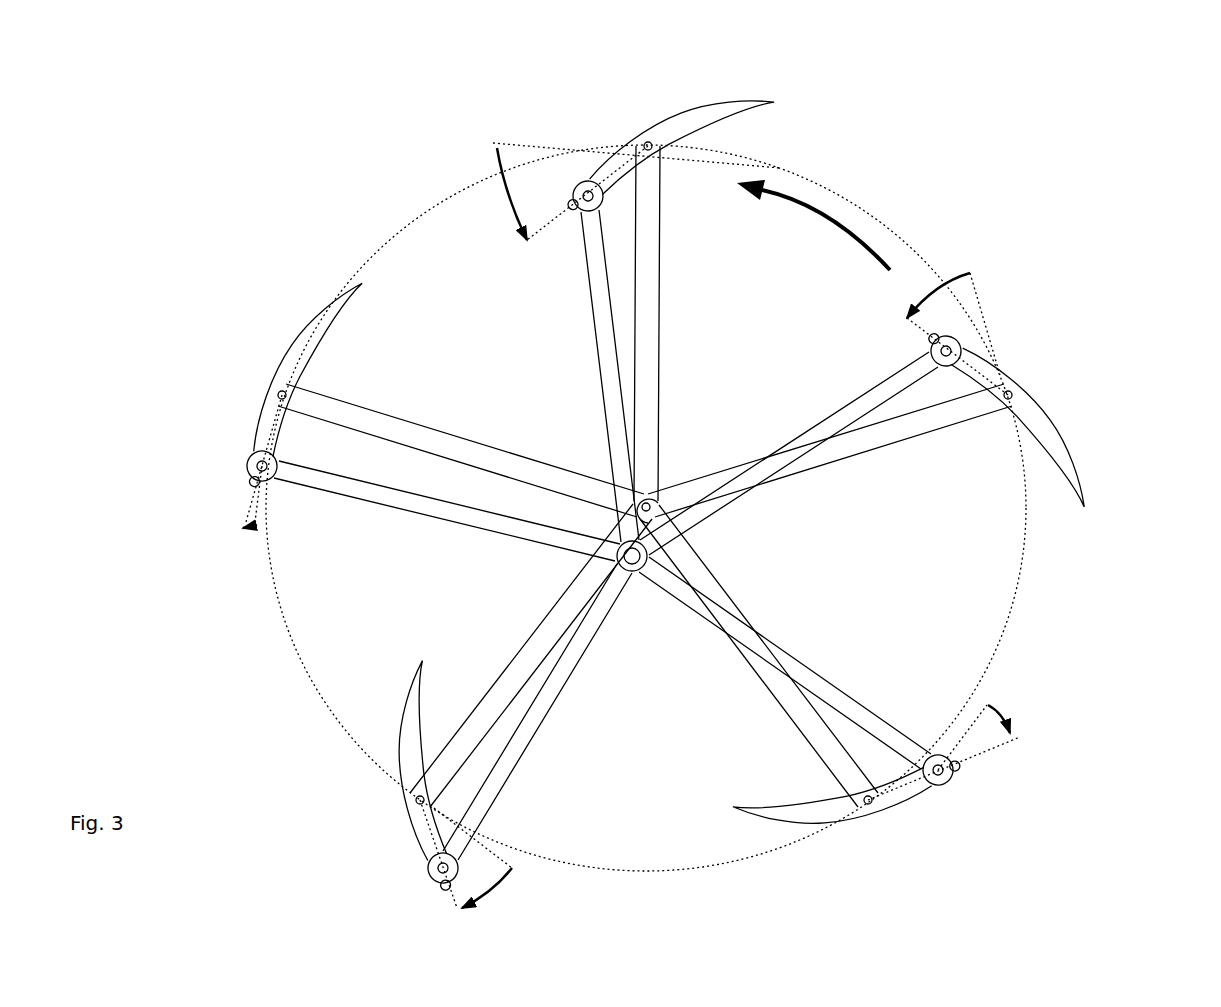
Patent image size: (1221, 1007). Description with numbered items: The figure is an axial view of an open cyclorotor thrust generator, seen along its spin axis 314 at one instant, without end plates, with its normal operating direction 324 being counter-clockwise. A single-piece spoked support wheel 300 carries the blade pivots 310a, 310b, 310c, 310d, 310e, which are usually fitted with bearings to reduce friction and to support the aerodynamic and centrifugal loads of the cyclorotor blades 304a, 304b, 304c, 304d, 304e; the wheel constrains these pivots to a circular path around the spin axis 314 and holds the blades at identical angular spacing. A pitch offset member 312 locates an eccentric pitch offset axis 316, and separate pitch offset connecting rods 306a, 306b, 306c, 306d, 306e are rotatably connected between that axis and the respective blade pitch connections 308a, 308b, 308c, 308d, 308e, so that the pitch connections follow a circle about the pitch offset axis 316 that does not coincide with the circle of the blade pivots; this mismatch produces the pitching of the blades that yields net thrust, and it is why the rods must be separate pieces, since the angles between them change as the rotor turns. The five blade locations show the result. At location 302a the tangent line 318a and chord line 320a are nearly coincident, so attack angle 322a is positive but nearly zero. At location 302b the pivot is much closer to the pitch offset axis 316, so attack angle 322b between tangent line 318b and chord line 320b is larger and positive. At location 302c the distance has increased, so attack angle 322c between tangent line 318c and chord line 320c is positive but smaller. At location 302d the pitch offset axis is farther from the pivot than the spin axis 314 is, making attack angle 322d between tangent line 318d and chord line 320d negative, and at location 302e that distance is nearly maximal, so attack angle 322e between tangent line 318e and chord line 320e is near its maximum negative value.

The spoked support wheel 300 is at (652, 488).
The location 302a is at (369, 436).
The location 302b is at (456, 758).
The location 302c is at (874, 745).
The location 302d is at (912, 377).
The location 302e is at (626, 283).
The cyclorotor blade 304a is at (297, 340).
The cyclorotor blade 304b is at (407, 711).
The cyclorotor blade 304c is at (770, 825).
The cyclorotor blade 304d is at (1085, 484).
The cyclorotor blade 304e is at (724, 116).
The pitch offset connecting rod 306a is at (341, 497).
The pitch offset connecting rod 306b is at (539, 738).
The pitch offset connecting rod 306c is at (858, 696).
The pitch offset connecting rod 306d is at (793, 432).
The pitch offset connecting rod 306e is at (595, 347).
The blade pitch connection 308a is at (250, 466).
The blade pitch connection 308b is at (434, 866).
The blade pitch connection 308c is at (941, 786).
The blade pitch connection 308d is at (952, 350).
The blade pitch connection 308e is at (582, 190).
The blade pivot 310a is at (279, 395).
The blade pivot 310b is at (417, 801).
The blade pivot 310c is at (868, 806).
The blade pivot 310d is at (1016, 393).
The blade pivot 310e is at (658, 154).
The pitch offset member 312 is at (656, 512).
The spin axis 314 is at (648, 499).
The pitch offset axis 316 is at (634, 566).
The tangent line 318a is at (263, 505).
The tangent line 318b is at (498, 850).
The tangent line 318c is at (962, 737).
The tangent line 318d is at (987, 307).
The tangent line 318e is at (540, 142).
The cyclorotor blade chord line 320a is at (245, 501).
The cyclorotor blade chord line 320b is at (446, 897).
The cyclorotor blade chord line 320c is at (944, 768).
The cyclorotor blade chord line 320d is at (916, 334).
The cyclorotor blade chord line 320e is at (557, 229).
The attack angle 322a is at (249, 535).
The attack angle 322b is at (491, 898).
The attack angle 322c is at (1004, 712).
The attack angle 322d is at (928, 286).
The attack angle 322e is at (500, 199).
The normal operating direction 324 is at (836, 200).